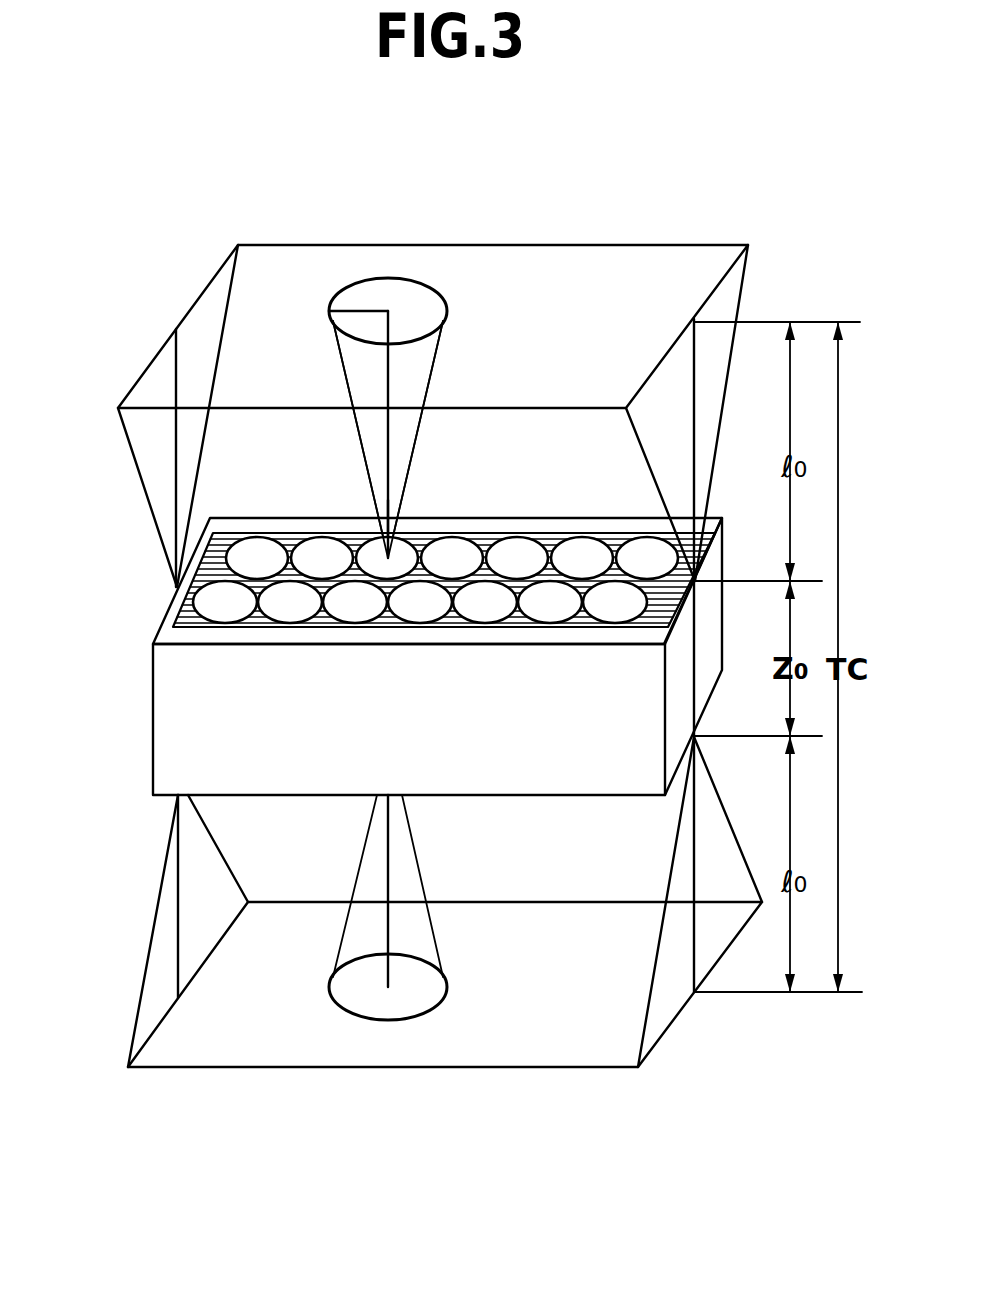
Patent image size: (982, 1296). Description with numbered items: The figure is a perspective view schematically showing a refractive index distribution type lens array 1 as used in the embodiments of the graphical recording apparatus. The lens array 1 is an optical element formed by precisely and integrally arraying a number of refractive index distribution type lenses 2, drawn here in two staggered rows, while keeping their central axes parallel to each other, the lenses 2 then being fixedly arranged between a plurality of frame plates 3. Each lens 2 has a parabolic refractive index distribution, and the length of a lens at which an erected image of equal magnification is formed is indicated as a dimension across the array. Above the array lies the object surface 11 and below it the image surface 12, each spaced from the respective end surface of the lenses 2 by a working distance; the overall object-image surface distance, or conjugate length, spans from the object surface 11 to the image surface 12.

The refractive index distribution type lens array 1 is at (153, 712).
The refractive index distribution type lenses 2 is at (177, 600).
The frame plates 3 is at (535, 518).
The object surface 11 is at (532, 257).
The image surface 12 is at (555, 1052).